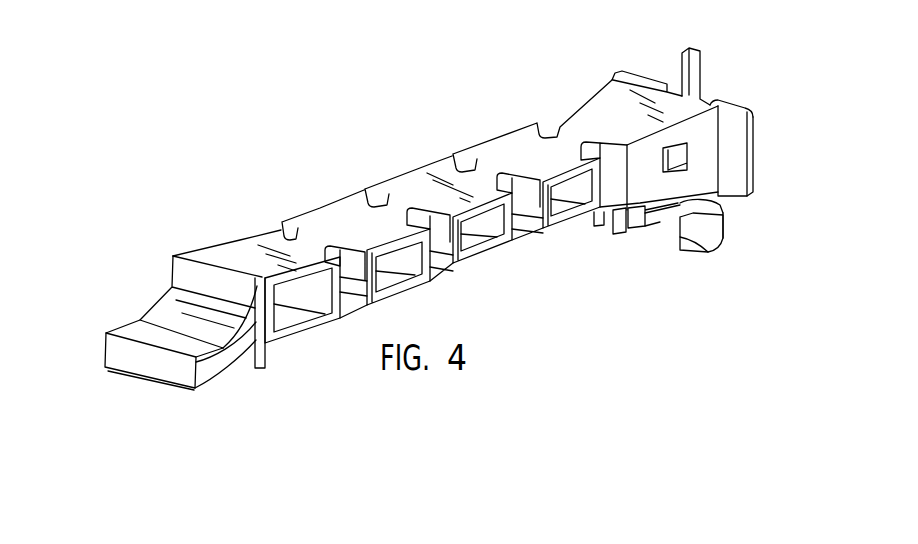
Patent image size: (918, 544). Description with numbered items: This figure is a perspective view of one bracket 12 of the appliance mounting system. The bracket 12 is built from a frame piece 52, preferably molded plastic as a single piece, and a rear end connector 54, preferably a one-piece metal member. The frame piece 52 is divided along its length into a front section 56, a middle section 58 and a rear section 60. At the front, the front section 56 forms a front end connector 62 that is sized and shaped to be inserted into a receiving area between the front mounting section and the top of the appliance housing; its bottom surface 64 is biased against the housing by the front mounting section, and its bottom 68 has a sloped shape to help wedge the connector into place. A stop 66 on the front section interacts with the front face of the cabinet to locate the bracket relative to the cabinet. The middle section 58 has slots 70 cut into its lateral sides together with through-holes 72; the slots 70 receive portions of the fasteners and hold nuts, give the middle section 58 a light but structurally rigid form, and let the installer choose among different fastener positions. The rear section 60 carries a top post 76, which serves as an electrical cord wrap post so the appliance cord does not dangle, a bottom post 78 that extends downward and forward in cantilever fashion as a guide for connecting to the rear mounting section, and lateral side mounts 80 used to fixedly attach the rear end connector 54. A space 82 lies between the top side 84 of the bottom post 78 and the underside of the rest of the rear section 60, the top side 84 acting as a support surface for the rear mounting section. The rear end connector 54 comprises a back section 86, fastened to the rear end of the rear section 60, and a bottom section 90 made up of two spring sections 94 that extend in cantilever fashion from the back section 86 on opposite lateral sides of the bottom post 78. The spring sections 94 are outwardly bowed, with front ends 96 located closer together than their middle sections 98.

The bracket 12 is at (413, 168).
The frame piece 52 is at (315, 208).
The rear end connector 54 is at (755, 142).
The front section 56 is at (103, 335).
The middle section 58 is at (478, 265).
The rear section 60 is at (587, 103).
The front end connector 62 is at (148, 371).
The bottom surface 64 is at (265, 370).
The stop 66 is at (175, 253).
The bottom 68 is at (185, 392).
The slots 70 is at (507, 175).
The through-holes 72 is at (560, 212).
The top post 76 is at (697, 56).
The bottom post 78 is at (637, 228).
The lateral side mounts 80 is at (730, 162).
The space 82 is at (622, 233).
The top side 84 is at (646, 214).
The back section 86 is at (728, 103).
The bottom section 90 is at (722, 248).
The spring sections 94 is at (600, 226).
The front ends 96 is at (708, 252).
The middle sections 98 is at (724, 224).